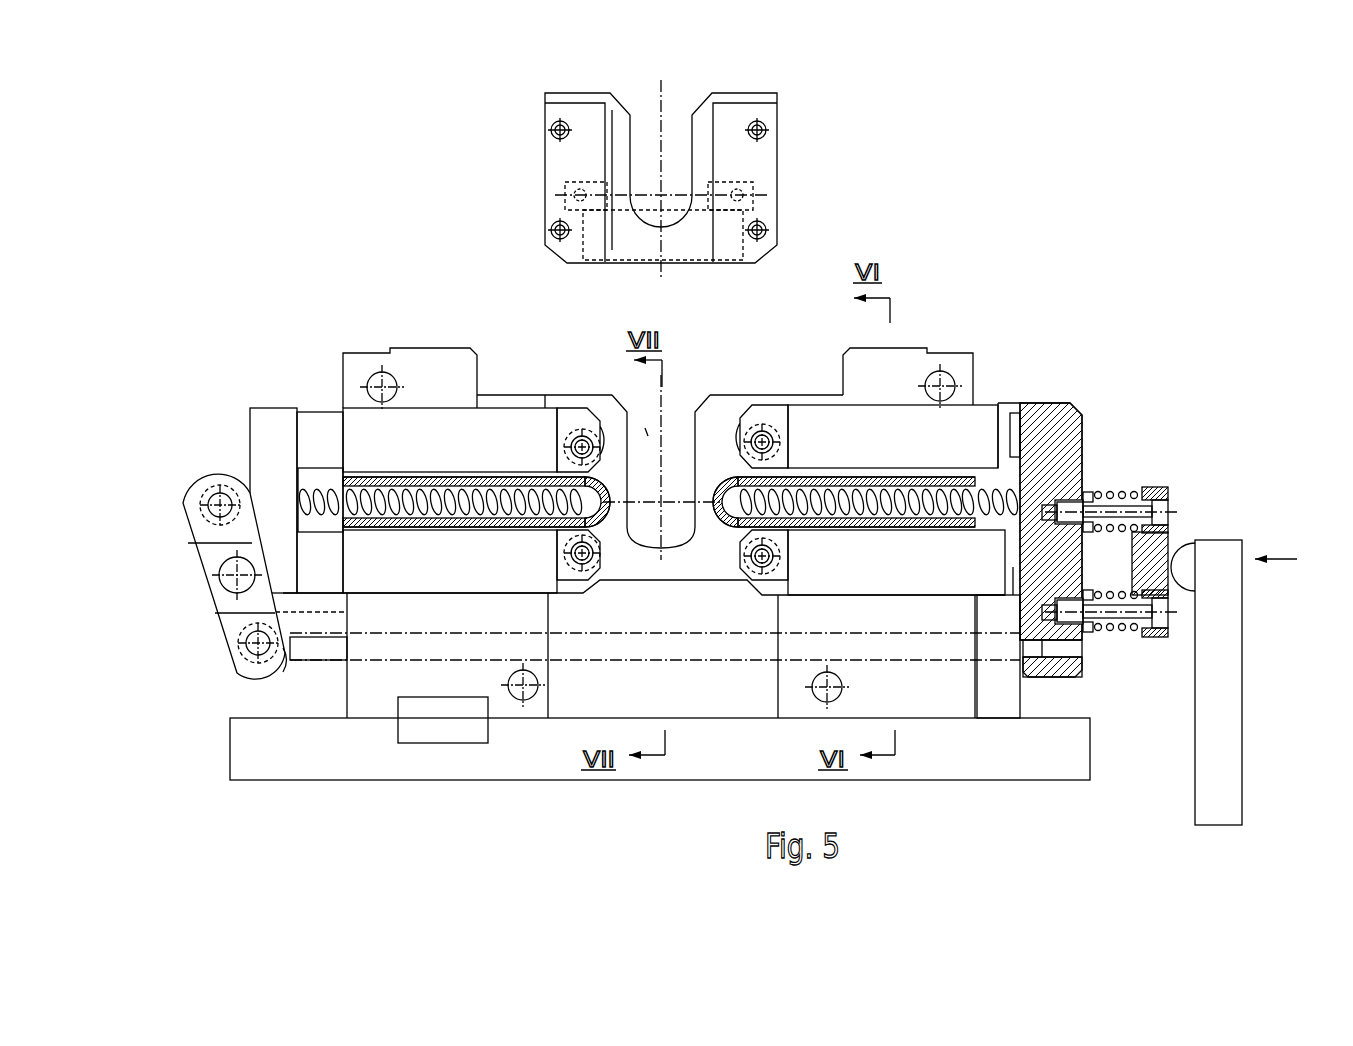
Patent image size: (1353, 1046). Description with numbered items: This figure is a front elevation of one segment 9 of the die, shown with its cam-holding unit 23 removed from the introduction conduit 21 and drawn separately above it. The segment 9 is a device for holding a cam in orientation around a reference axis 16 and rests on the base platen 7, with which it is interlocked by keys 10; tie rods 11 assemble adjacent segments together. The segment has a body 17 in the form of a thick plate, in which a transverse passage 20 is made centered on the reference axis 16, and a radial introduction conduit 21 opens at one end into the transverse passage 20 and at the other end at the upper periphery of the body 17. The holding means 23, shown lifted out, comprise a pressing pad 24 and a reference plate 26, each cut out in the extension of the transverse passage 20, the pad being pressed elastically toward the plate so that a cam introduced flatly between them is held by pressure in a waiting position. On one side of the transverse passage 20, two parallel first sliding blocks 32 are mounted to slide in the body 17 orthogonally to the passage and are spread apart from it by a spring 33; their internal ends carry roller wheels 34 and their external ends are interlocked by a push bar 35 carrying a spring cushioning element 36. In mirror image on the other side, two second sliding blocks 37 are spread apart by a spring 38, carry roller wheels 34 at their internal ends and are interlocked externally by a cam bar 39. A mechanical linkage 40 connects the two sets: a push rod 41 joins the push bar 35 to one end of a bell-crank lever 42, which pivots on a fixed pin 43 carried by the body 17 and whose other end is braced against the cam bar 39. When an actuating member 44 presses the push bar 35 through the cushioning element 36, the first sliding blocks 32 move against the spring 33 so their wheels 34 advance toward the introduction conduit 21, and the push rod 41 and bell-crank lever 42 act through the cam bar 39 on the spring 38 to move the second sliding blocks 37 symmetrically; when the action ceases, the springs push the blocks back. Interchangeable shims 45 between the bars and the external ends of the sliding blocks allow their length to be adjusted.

The base platen 7 is at (948, 753).
The segment 9 is at (1105, 292).
The key 10 is at (448, 720).
The tie rod 11 is at (945, 385).
The reference axis 16 is at (677, 457).
The body 17 is at (720, 410).
The transverse passage 20 is at (683, 528).
The introduction conduit 21 is at (647, 433).
The holding means 23 is at (518, 153).
The pressing pad 24 is at (695, 237).
The reference plate 26 is at (618, 125).
The first sliding block 32 is at (868, 425).
The spring 33 is at (1068, 440).
The roller wheel 34 is at (598, 407).
The push bar 35 is at (1083, 467).
The spring cushioning element 36 is at (1155, 545).
The second sliding block 37 is at (490, 547).
The spring 38 is at (335, 503).
The cam bar 39 is at (268, 433).
The mechanical linkage 40 is at (307, 687).
The push rod 41 is at (987, 650).
The bell-crank lever 42 is at (228, 627).
The fixed pin 43 is at (205, 587).
The actuating member 44 is at (1228, 708).
The interchangeable shim 45 is at (310, 440).